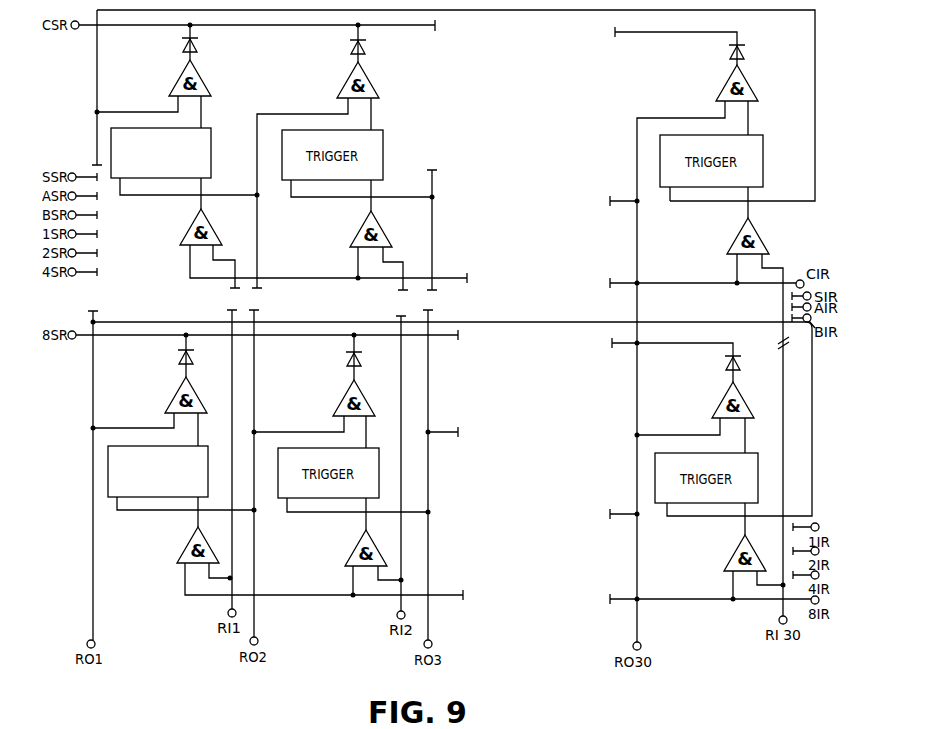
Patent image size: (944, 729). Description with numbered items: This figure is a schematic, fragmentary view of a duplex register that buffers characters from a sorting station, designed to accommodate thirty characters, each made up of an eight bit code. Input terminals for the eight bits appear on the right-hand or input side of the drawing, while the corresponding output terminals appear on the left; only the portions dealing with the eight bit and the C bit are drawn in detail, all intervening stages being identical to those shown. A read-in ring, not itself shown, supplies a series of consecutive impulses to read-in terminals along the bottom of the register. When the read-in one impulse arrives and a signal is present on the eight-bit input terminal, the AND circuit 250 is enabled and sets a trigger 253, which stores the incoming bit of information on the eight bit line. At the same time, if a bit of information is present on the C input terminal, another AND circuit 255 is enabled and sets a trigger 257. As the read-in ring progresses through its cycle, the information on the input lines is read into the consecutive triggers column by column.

The trigger 257 is at (211, 158).
The AND circuit 255 is at (214, 232).
The trigger 253 is at (208, 457).
The AND circuit 250 is at (186, 551).